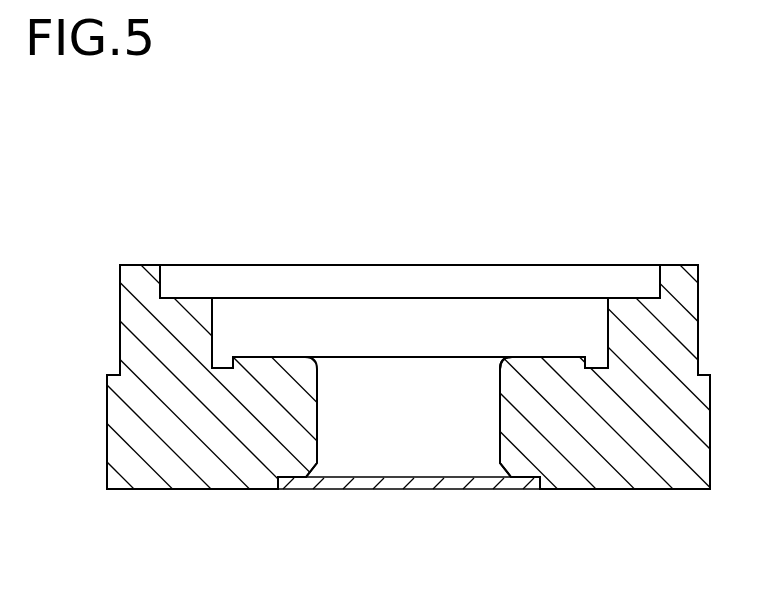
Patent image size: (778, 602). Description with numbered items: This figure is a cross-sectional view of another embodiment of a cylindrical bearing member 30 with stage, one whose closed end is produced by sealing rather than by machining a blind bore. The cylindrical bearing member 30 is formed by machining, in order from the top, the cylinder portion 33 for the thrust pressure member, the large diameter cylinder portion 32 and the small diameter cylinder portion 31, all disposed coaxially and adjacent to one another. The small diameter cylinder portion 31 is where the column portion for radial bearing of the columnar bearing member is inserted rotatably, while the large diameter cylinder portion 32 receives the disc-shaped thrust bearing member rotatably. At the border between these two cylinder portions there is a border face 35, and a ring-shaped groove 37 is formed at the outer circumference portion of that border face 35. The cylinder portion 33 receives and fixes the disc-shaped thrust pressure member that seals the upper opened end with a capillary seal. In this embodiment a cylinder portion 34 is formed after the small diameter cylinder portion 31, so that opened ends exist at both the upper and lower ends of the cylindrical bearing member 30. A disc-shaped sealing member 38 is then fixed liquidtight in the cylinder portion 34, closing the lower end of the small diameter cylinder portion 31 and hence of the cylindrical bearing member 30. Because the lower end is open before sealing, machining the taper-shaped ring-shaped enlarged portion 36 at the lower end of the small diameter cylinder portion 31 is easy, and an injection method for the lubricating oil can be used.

The cylindrical bearing member 30 is at (163, 447).
The small diameter cylinder portion 31 is at (500, 418).
The large diameter cylinder portion 32 is at (603, 330).
The cylinder portion for thrust pressure member 33 is at (653, 277).
The cylinder portion 34 is at (530, 487).
The border face 35 is at (568, 357).
The ring-shaped enlarged portion 36 is at (317, 470).
The ring-shaped groove 37 is at (607, 365).
The sealing member 38 is at (450, 483).